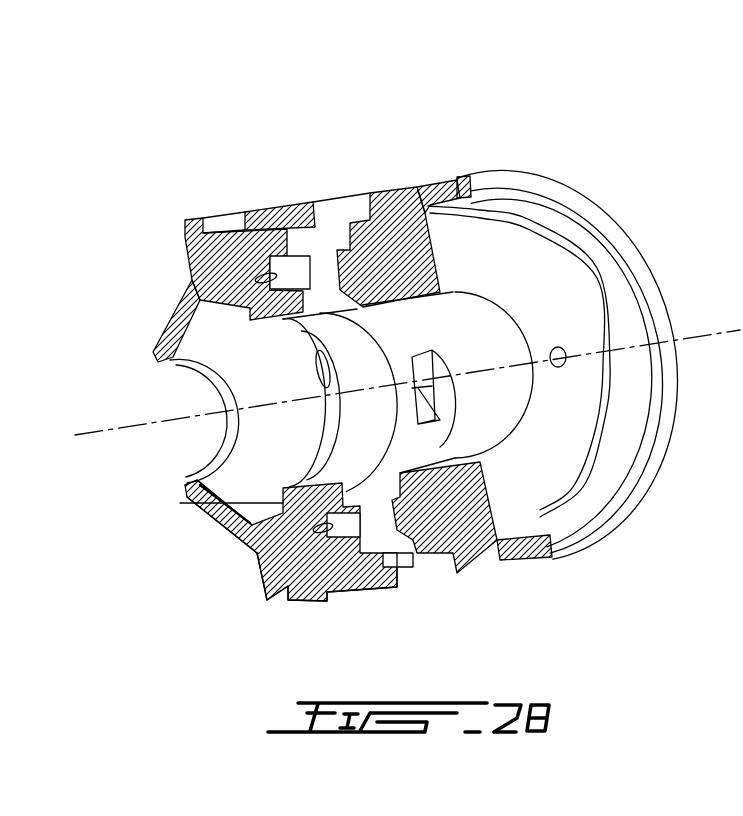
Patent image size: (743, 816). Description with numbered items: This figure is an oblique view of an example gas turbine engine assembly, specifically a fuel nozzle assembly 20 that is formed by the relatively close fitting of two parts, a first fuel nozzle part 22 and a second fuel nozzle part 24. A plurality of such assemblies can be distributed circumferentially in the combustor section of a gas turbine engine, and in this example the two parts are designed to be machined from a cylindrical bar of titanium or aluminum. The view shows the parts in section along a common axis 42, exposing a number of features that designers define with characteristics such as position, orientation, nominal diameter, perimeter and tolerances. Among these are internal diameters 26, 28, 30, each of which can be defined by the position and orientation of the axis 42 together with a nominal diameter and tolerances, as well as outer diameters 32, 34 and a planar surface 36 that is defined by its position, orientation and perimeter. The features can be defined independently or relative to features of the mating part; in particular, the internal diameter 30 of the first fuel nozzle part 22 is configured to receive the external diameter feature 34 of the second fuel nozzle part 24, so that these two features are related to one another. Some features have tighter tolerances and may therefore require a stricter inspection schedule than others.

The fuel nozzle assembly 20 is at (220, 211).
The first fuel nozzle part 22 is at (282, 204).
The second fuel nozzle part 24 is at (567, 185).
The internal diameter 26 is at (348, 362).
The internal diameter 28 is at (493, 412).
The internal diameter 30 is at (180, 503).
The outer diameter 32 is at (365, 597).
The external diameter feature 34 is at (423, 553).
The planar surface 36 is at (408, 347).
The axis 42 is at (707, 333).